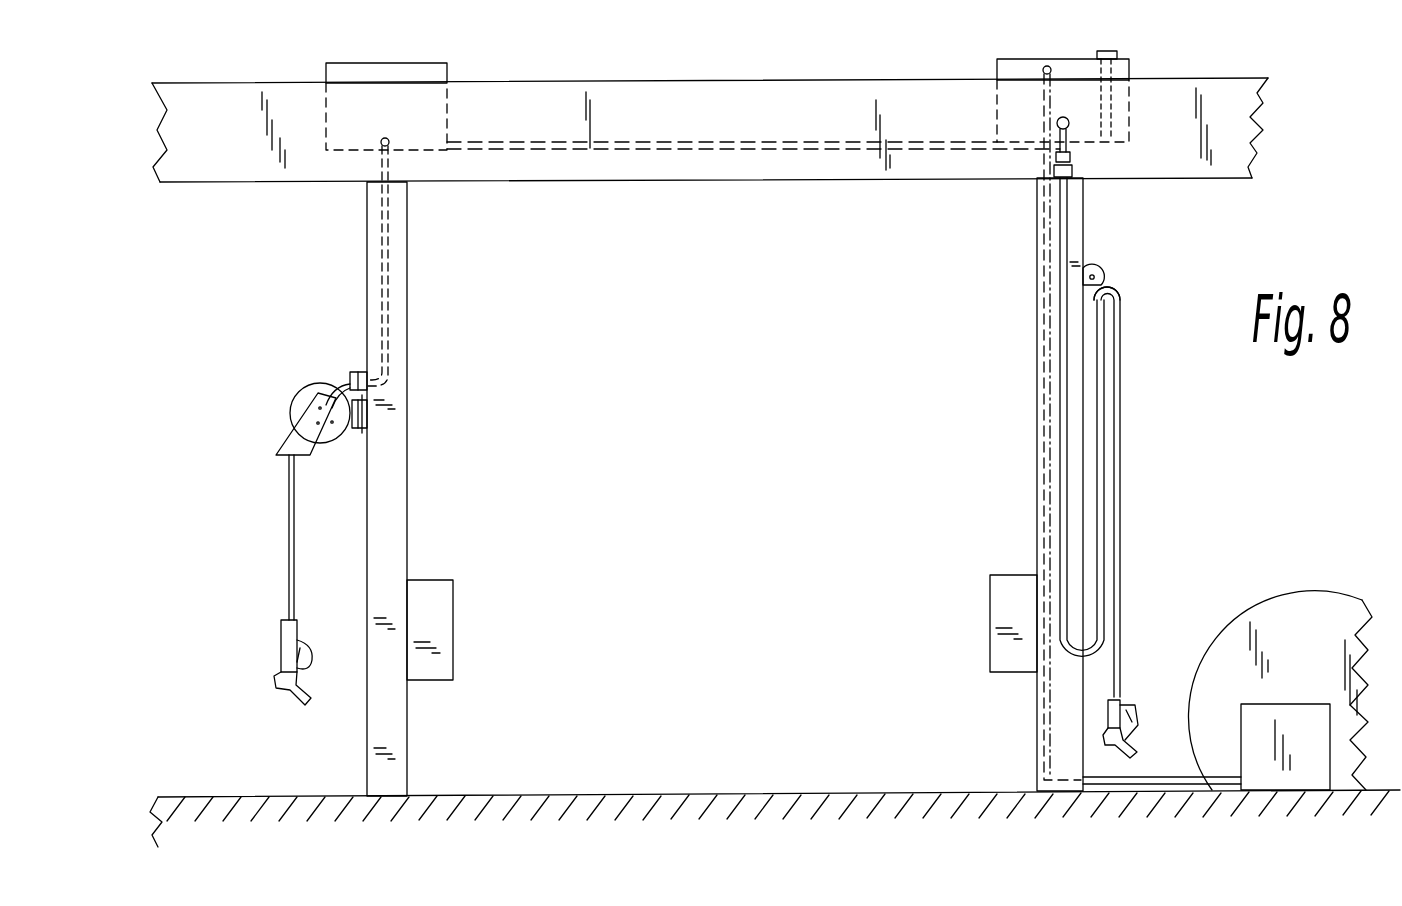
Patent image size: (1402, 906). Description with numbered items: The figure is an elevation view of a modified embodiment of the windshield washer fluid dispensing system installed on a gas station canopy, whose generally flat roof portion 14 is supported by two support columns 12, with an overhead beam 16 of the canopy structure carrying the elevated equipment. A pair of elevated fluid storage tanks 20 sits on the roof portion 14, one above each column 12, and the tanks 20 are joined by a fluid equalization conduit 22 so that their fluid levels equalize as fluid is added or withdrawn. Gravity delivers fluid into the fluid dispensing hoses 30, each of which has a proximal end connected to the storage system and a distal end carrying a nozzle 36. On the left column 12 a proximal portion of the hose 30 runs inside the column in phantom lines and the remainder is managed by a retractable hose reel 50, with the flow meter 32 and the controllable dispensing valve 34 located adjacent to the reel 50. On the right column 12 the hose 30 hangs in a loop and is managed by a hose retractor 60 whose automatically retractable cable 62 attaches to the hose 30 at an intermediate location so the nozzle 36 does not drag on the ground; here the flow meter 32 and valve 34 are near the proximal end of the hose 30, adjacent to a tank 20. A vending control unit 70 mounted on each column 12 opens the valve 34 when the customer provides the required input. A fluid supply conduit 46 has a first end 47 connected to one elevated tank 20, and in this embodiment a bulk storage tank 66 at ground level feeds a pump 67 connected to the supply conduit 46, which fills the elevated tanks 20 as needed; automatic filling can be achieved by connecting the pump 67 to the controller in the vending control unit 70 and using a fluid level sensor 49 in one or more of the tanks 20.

The support column 12 is at (408, 485).
The roof portion 14 is at (812, 63).
The overhead beam 16 is at (862, 97).
The fluid storage tank 20 is at (447, 72).
The fluid equalization conduit 22 is at (668, 140).
The fluid dispensing hose 30 is at (388, 333).
The flow meter 32 is at (352, 372).
The controllable dispensing valve 34 is at (350, 378).
The nozzle 36 is at (280, 640).
The fluid supply conduit 46 is at (1040, 318).
The first end of supply conduit 47 is at (1043, 70).
The fluid level sensor 49 is at (1118, 55).
The hose reel 50 is at (283, 440).
The hose retractor 60 is at (1100, 276).
The retractable cable 62 is at (1118, 293).
The bulk storage tank 66 is at (1240, 628).
The pump 67 is at (1282, 712).
The vending control unit 70 is at (453, 598).